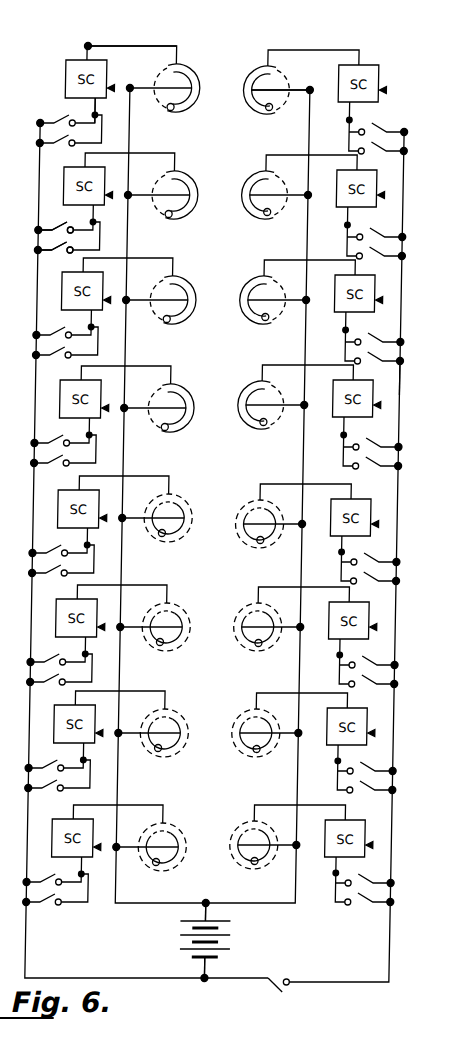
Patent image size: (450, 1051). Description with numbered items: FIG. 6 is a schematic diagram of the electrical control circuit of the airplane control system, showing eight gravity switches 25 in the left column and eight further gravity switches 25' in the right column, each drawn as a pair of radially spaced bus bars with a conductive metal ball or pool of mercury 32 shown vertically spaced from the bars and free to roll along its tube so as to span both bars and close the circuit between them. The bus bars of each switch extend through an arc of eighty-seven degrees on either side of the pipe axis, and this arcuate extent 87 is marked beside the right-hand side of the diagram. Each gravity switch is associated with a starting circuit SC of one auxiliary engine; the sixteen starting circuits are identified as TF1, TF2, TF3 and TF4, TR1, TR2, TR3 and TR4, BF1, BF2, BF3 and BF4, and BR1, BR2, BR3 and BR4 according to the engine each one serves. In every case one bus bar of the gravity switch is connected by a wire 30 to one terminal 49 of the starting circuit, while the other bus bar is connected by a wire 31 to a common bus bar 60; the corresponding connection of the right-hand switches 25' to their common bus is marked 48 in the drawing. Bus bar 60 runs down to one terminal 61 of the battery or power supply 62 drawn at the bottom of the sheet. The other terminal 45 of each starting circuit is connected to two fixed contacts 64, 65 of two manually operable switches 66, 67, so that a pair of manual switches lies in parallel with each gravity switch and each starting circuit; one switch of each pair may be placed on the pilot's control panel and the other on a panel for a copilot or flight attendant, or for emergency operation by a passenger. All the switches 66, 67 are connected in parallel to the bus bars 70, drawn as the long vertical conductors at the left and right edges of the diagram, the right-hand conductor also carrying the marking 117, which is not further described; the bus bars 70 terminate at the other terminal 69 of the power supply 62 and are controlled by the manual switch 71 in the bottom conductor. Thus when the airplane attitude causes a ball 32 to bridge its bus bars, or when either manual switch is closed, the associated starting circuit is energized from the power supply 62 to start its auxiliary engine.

The gravity switch 25 is at (165, 190).
The gravity switch 25' is at (259, 537).
The wire 30 is at (158, 45).
The wire 31 is at (152, 60).
The metal ball or pool of mercury 32 is at (170, 102).
The terminal of starting circuit 45 is at (99, 110).
The motor lead 48 is at (300, 93).
The terminal of starting circuit 49 is at (85, 46).
The bus bar 60 is at (133, 462).
The battery terminal 61 is at (225, 910).
The battery or power supply 62 is at (235, 940).
The fixed contact 64 is at (96, 235).
The fixed contact 65 is at (80, 252).
The manually operable switch 66 is at (70, 227).
The manually operable switch 67 is at (68, 247).
The power supply terminal 69 is at (220, 968).
The bus bars 70 is at (41, 289).
The manual switch 71 is at (296, 991).
The 87° arcuate extent of bus bars 87 is at (449, 375).
The right supply bus 117 is at (449, 350).
The speed controller, top front wheel 1 TF1 is at (382, 90).
The speed controller, top front wheel 2 TF2 is at (111, 89).
The speed controller, top front wheel 3 TF3 is at (382, 195).
The speed controller, top front wheel 4 TF4 is at (111, 196).
The speed controller, top rear wheel 1 TR1 is at (382, 300).
The speed controller, top rear wheel 2 TR2 is at (111, 301).
The speed controller, top rear wheel 3 TR3 is at (382, 405).
The speed controller, top rear wheel 4 TR4 is at (111, 409).
The speed controller, bottom front wheel 1 BF1 is at (382, 524).
The speed controller, bottom front wheel 2 BF2 is at (111, 519).
The speed controller, bottom front wheel 3 BF3 is at (382, 627).
The speed controller, bottom front wheel 4 BF4 is at (111, 628).
The speed controller, bottom rear wheel 1 BR1 is at (382, 733).
The speed controller, bottom rear wheel 2 BR2 is at (111, 734).
The speed controller, bottom rear wheel 3 BR3 is at (382, 845).
The speed controller, bottom rear wheel 4 BR4 is at (111, 848).